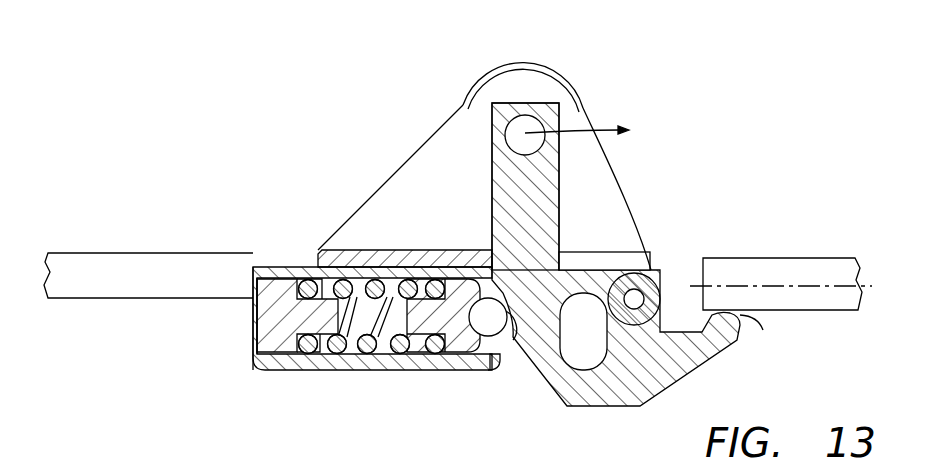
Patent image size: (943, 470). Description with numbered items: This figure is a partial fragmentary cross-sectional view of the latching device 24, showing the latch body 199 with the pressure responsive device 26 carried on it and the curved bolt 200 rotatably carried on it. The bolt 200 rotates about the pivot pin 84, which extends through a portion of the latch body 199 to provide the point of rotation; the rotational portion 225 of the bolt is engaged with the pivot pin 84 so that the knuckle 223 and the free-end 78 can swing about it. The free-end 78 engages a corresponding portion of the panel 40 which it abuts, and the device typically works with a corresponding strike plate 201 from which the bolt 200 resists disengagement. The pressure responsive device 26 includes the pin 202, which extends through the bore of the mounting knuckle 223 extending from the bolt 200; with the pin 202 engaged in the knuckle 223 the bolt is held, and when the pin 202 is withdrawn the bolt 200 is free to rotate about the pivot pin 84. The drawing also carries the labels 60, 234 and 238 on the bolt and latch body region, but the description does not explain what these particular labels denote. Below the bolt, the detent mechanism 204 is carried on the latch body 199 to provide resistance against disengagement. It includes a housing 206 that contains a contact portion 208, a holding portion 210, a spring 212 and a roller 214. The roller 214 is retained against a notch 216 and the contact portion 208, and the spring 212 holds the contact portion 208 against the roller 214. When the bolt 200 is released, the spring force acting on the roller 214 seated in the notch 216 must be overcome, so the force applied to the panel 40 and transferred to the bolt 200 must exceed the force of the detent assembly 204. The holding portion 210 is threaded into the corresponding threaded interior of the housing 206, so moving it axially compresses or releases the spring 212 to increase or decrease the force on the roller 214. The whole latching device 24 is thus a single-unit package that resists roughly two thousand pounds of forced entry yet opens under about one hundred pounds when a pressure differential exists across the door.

The latching device 24 is at (328, 120).
The pressure responsive device 26 is at (464, 83).
The panel 40 is at (95, 265).
The arcuate surface 60 is at (570, 76).
The free-end of the bolt 78 is at (717, 393).
The pivot pin 84 is at (650, 271).
The latch body 199 is at (349, 218).
The bolt 200 is at (490, 194).
The strike plate 201 is at (800, 258).
The pin 202 is at (555, 140).
The detent mechanism 204 is at (415, 375).
The housing 206 is at (330, 368).
The contact portion 208 is at (448, 368).
The holding portion 210 is at (253, 315).
The spring 212 is at (372, 370).
The roller 214 is at (487, 337).
The notch 216 is at (512, 345).
The mounting knuckle 223 is at (554, 160).
The rotational portion 225 is at (634, 298).
The plate 234 is at (318, 260).
The channel 238 is at (590, 280).